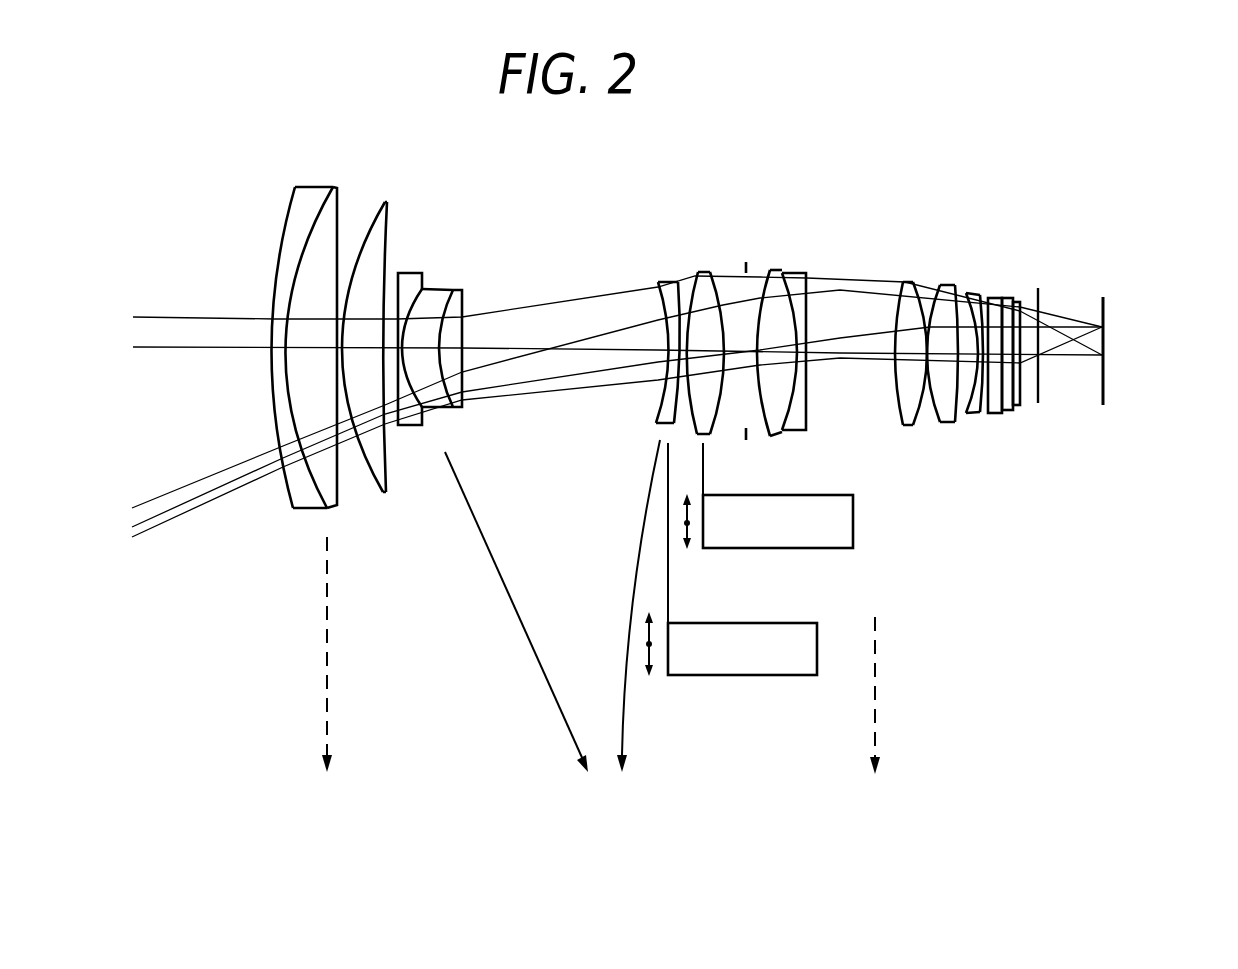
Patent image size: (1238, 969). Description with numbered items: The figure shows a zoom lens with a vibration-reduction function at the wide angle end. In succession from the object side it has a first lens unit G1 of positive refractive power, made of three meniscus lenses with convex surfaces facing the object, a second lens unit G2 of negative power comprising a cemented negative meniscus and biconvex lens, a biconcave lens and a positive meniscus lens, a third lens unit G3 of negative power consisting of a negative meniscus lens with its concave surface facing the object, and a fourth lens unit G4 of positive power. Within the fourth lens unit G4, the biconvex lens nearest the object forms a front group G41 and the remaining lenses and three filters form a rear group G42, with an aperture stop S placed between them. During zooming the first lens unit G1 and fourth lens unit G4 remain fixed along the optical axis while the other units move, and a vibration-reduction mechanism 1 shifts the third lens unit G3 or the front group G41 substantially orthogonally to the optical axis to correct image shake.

The first lens unit G1 is at (397, 176).
The second lens unit G2 is at (468, 263).
The third lens unit G3 is at (660, 337).
The fourth lens unit G4 is at (1035, 130).
The front group G41 is at (700, 272).
The rear group G42 is at (1022, 252).
The aperture stop S is at (744, 369).
The vibration-reduction mechanism 1 is at (743, 550).